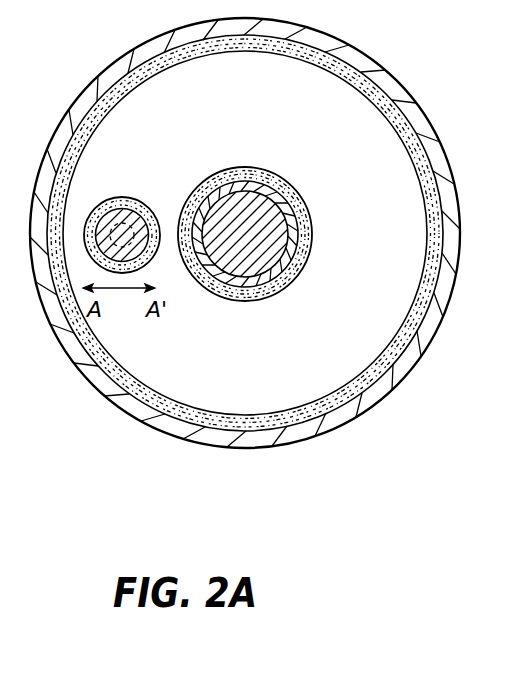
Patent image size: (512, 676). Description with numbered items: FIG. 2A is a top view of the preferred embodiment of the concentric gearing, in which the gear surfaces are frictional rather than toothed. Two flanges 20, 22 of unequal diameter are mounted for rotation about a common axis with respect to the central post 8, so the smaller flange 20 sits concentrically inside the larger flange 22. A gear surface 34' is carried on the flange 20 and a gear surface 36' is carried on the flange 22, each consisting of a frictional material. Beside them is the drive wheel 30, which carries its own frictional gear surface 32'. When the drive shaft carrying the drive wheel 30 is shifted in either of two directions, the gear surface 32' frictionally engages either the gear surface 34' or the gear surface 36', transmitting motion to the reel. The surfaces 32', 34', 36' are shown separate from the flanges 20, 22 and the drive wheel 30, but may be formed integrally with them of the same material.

The flange 22 is at (457, 195).
The gear surface 36' is at (245, 233).
The drive wheel 30 is at (118, 223).
The gear surface 32' is at (133, 217).
The gear surface 34' is at (245, 216).
The flange 20 is at (297, 275).
The central post 8 is at (232, 260).